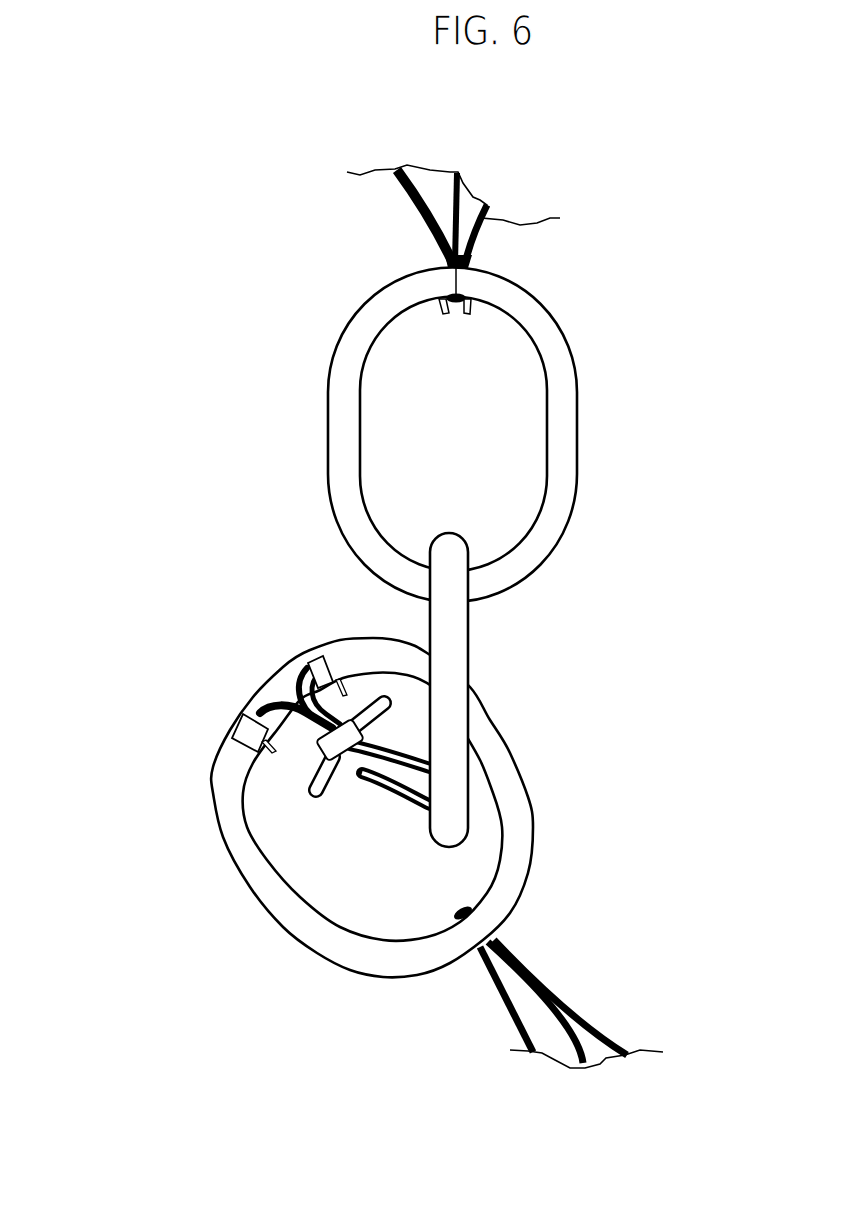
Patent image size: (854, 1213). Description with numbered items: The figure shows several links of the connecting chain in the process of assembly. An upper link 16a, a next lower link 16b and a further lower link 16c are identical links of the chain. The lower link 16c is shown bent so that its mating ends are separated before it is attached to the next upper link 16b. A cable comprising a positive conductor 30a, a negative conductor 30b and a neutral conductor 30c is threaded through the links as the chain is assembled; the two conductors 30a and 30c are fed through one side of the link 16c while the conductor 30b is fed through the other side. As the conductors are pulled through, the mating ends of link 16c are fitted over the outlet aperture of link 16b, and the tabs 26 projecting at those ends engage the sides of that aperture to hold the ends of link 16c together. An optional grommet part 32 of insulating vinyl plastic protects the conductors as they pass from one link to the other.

The upper link 16a is at (563, 410).
The next lower link 16b is at (460, 637).
The further lower link 16c is at (525, 845).
The tabs 26 is at (446, 313).
The positive conductor 30a is at (303, 673).
The negative conductor 30b is at (298, 698).
The neutral conductor 30c is at (297, 700).
The grommet part 32 is at (310, 787).